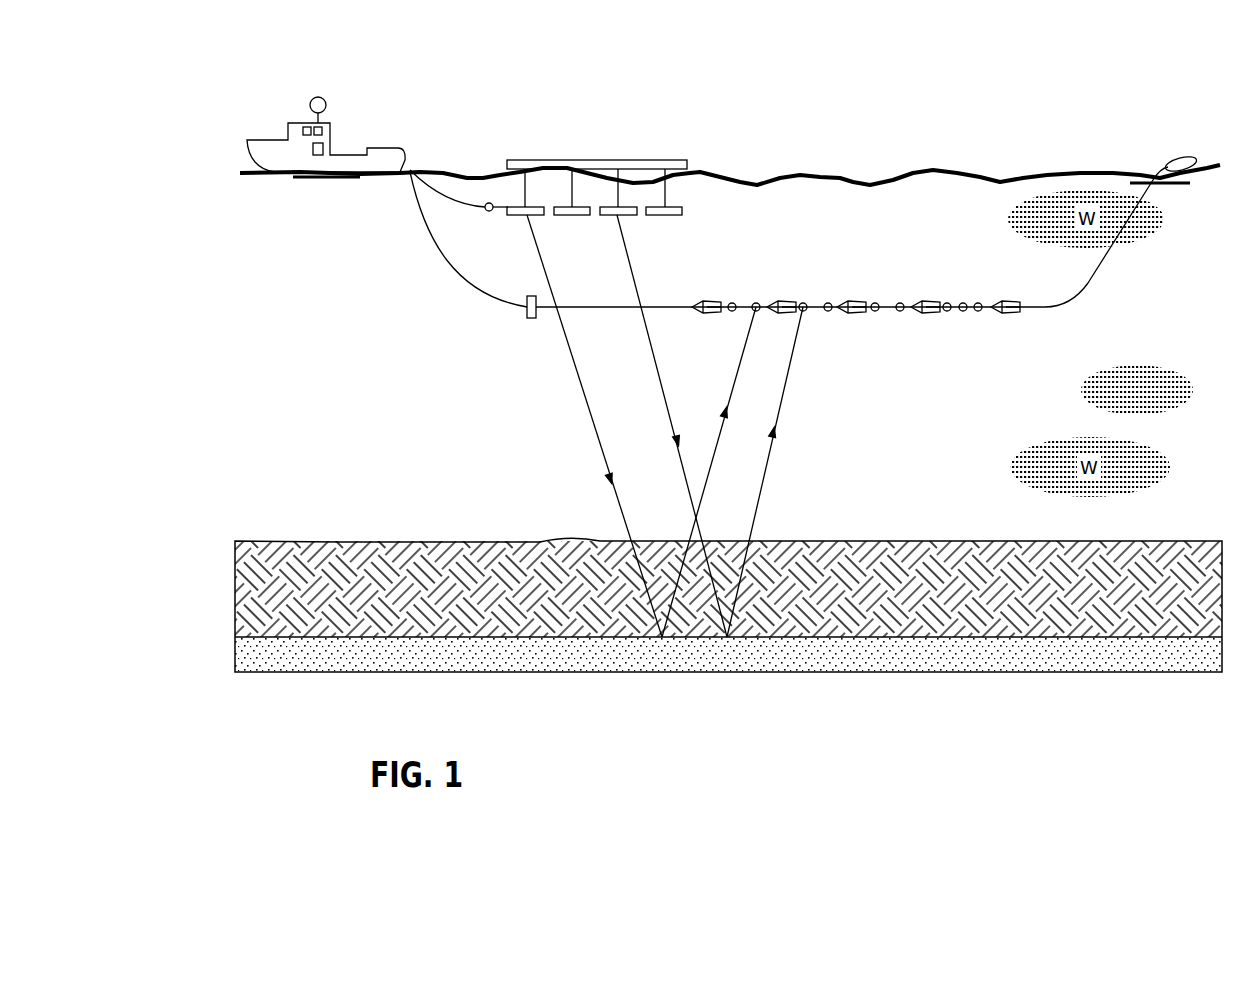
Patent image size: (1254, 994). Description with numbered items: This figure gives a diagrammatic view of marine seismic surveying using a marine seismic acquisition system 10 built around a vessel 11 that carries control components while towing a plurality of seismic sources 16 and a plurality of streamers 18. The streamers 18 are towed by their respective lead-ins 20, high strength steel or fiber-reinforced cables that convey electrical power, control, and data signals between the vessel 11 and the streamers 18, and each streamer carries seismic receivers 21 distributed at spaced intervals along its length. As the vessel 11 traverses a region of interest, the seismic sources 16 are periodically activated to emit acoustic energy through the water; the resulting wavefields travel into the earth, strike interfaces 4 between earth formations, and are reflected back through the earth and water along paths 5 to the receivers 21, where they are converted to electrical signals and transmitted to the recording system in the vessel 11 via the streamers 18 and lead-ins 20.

The marine seismic acquisition system 10 is at (743, 113).
The vessel 11 is at (260, 140).
The lead-ins 20 is at (452, 266).
The seismic sources 16 is at (637, 216).
The streamers 18 is at (742, 307).
The seismic receivers 21 is at (732, 303).
The paths 5 is at (723, 432).
The interfaces 4 is at (986, 637).